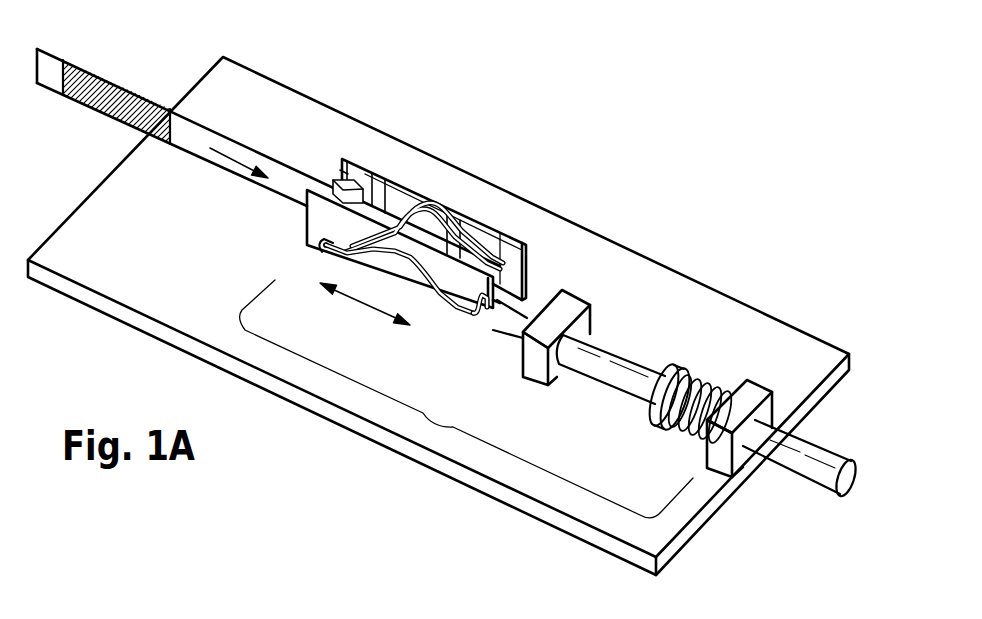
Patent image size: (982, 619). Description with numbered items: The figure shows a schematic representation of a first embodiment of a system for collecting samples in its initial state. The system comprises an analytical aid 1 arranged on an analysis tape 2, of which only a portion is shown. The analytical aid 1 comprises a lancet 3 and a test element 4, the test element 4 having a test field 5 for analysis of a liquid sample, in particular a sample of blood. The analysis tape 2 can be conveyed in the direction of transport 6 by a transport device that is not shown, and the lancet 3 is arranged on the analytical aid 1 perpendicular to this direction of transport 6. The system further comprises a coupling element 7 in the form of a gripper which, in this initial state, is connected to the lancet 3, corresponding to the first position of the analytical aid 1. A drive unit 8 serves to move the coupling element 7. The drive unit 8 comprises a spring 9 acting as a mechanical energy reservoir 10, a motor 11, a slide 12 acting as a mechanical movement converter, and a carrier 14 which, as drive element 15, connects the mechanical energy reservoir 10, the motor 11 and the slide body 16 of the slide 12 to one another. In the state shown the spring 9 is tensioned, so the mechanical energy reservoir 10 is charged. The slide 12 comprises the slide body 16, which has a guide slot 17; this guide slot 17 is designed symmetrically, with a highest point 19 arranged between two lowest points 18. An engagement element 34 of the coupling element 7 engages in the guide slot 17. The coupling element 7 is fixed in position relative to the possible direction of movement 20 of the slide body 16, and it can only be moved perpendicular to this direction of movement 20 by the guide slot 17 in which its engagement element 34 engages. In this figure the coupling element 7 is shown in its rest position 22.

The analytical aid 1 is at (143, 62).
The analysis tape 2 is at (50, 72).
The lancet 3 is at (335, 180).
The test element 4 is at (187, 138).
The test field 5 is at (103, 108).
The direction of transport 6 is at (227, 162).
The coupling element 7 is at (350, 190).
The drive unit 8 is at (433, 423).
The spring 9 is at (711, 385).
The mechanical energy reservoir 10 is at (752, 434).
The motor 11 is at (563, 310).
The slide 12 is at (400, 187).
The carrier 14 is at (603, 365).
The drive element 15 is at (690, 403).
The slide body 16 is at (502, 255).
The guide slot 17 is at (503, 253).
The lowest points 18 is at (322, 268).
The highest point 19 is at (433, 207).
The direction of movement 20 is at (373, 310).
The rest position 22 is at (347, 147).
The engagement element 34 is at (322, 253).